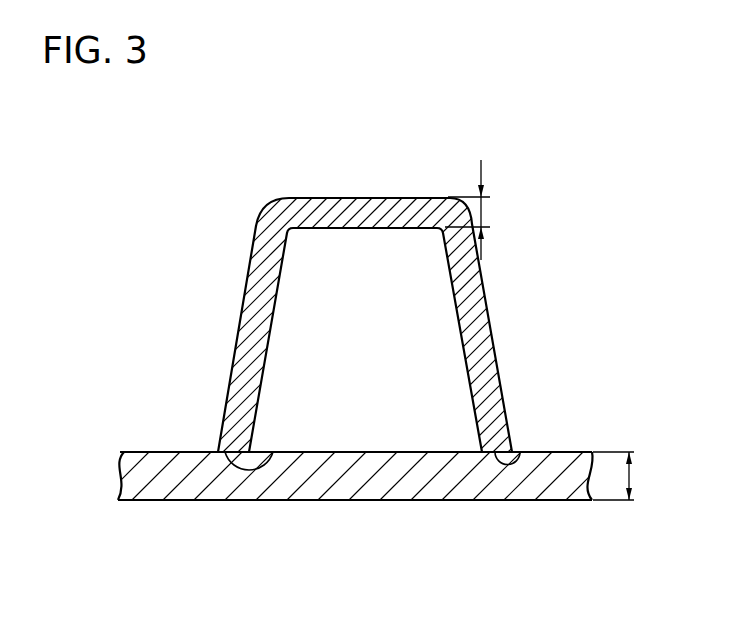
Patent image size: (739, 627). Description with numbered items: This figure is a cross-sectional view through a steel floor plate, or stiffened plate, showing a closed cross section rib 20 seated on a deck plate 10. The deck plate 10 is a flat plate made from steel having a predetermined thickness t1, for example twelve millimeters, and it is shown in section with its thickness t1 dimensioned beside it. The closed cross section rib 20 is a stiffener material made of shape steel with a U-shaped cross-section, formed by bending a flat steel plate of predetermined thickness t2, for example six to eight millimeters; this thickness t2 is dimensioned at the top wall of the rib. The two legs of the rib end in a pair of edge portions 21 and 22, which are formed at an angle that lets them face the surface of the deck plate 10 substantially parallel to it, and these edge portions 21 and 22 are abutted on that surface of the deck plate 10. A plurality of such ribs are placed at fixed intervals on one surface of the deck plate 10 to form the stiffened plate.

The deck plate 10 is at (340, 483).
The closed cross section rib 20 is at (236, 328).
The edge portion 21 is at (522, 452).
The edge portion 22 is at (273, 452).
The thickness of deck plate t1 is at (630, 476).
The thickness of closed cross section rib t2 is at (483, 210).